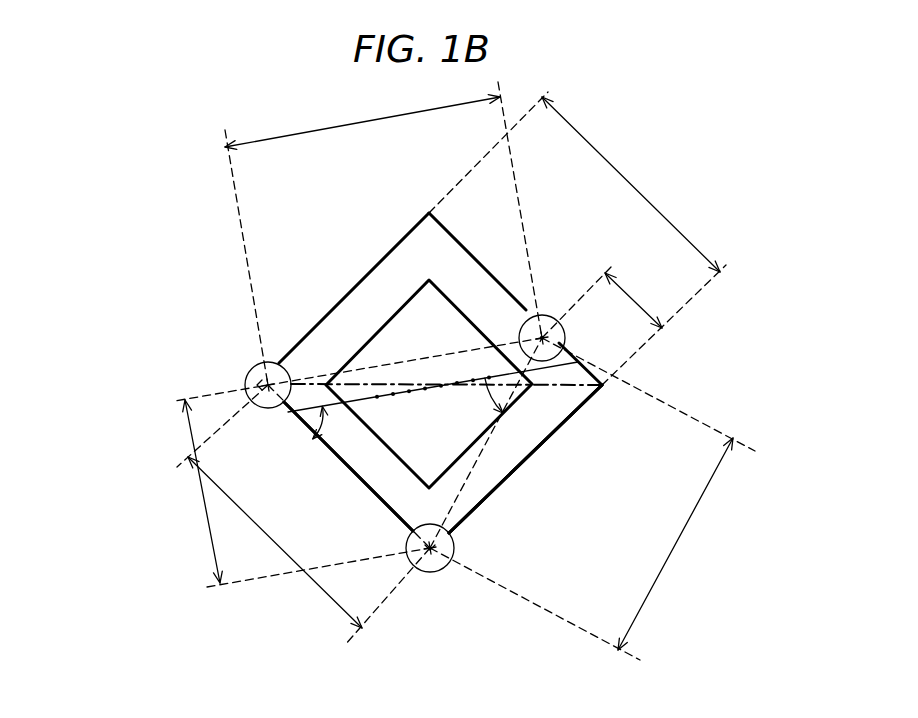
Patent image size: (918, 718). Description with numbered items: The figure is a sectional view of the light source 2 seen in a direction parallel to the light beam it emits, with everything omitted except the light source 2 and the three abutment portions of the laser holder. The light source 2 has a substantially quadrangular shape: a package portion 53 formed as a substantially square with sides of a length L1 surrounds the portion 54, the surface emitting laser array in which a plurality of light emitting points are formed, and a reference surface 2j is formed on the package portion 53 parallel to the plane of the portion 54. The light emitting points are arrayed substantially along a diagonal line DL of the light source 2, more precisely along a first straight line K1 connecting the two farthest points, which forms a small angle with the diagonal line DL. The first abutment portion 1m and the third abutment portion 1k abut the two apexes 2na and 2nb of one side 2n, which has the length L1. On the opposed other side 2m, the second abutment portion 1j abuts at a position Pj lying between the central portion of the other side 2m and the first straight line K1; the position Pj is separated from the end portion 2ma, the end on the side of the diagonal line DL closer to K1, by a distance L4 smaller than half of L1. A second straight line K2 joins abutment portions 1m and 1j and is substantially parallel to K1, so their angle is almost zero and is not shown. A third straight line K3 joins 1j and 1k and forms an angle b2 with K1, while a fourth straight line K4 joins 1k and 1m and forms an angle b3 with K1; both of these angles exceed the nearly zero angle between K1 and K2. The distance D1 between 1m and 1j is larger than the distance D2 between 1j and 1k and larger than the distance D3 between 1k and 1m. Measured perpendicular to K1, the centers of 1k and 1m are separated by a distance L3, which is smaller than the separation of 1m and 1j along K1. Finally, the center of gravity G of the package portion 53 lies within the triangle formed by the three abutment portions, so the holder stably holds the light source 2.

The first abutment portion 1m is at (252, 362).
The second abutment portion 1j is at (548, 318).
The third abutment portion 1k is at (430, 573).
The light source 2 is at (420, 422).
The other side 2m is at (461, 246).
The one side 2n is at (338, 464).
The reference surface 2j is at (462, 540).
The end portion 2ma is at (607, 386).
The end portion 2na is at (248, 378).
The end portion 2nb is at (443, 570).
The package portion 53 is at (492, 490).
The surface emitting laser array portion 54 is at (417, 315).
The center of gravity G is at (428, 383).
The position Pj is at (550, 339).
The diagonal line DL is at (558, 388).
The first straight line K1 is at (300, 424).
The second straight line K2 is at (362, 370).
The third straight line K3 is at (523, 470).
The fourth straight line K4 is at (371, 496).
The angle β2 b2 is at (480, 397).
The angle β3 b3 is at (333, 424).
The distance D1 is at (383, 233).
The length L1 is at (577, 238).
The distance L3 is at (306, 493).
The distance L4 is at (602, 302).
The distance D2 is at (592, 499).
The distance D3 is at (303, 515).